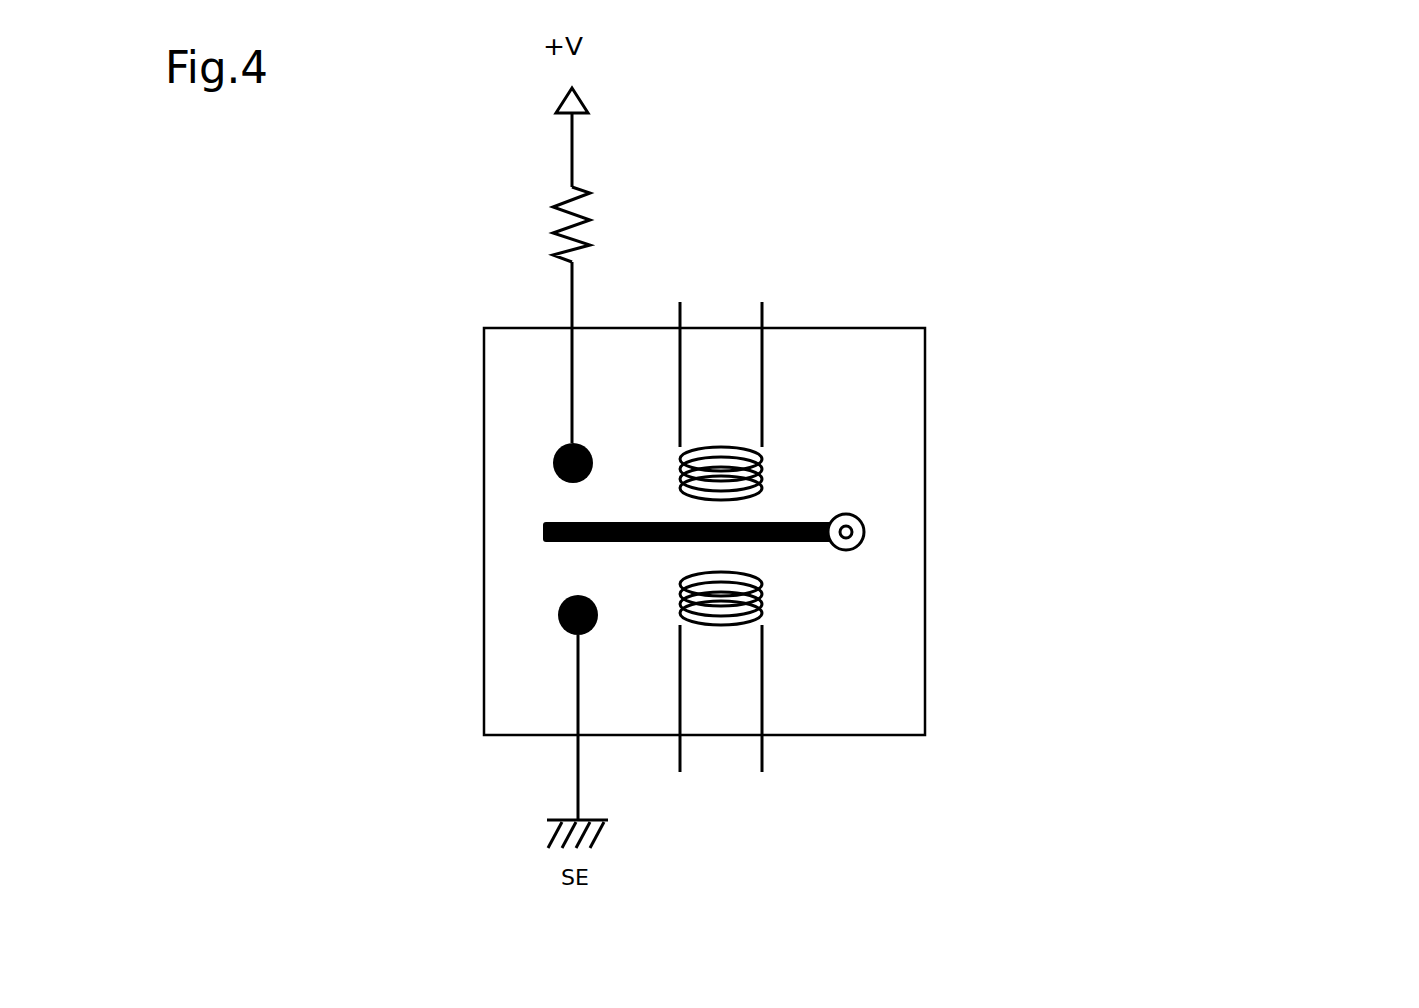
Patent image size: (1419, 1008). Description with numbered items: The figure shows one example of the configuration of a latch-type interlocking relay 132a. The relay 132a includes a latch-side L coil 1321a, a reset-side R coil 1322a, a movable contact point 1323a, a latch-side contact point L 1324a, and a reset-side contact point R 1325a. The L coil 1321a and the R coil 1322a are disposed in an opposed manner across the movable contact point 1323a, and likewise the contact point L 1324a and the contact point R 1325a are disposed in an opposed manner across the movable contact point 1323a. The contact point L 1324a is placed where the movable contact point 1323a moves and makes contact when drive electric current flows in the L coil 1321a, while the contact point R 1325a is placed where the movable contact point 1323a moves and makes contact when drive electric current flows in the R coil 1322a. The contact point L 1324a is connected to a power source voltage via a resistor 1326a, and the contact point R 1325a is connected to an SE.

The resistor 1326a is at (552, 214).
The latch-side L coil 1321a is at (718, 445).
The interlocking relay 132a is at (925, 371).
The movable contact point 1323a is at (793, 522).
The latch-side contact point L 1324a is at (553, 466).
The reset-side contact point R 1325a is at (560, 621).
The reset-side R coil 1322a is at (728, 628).